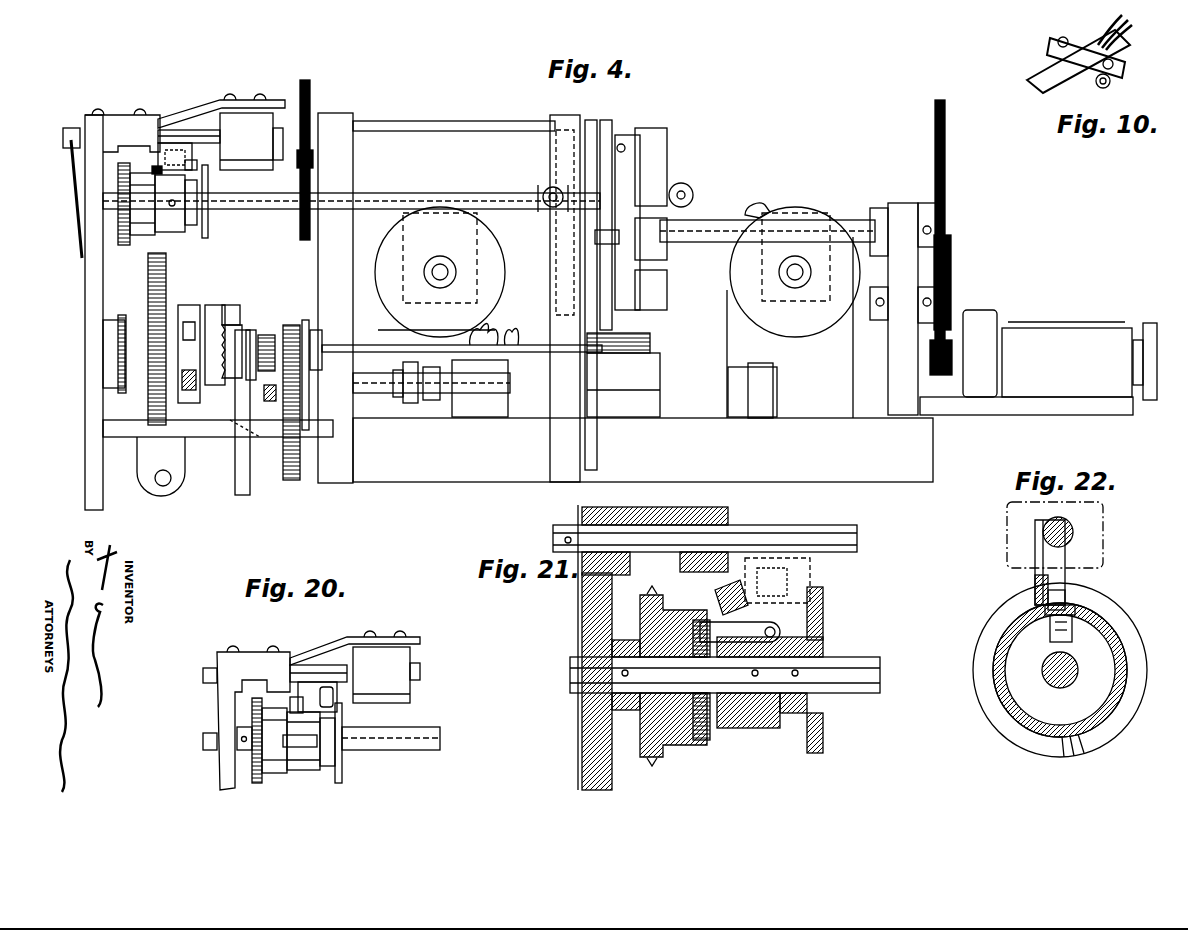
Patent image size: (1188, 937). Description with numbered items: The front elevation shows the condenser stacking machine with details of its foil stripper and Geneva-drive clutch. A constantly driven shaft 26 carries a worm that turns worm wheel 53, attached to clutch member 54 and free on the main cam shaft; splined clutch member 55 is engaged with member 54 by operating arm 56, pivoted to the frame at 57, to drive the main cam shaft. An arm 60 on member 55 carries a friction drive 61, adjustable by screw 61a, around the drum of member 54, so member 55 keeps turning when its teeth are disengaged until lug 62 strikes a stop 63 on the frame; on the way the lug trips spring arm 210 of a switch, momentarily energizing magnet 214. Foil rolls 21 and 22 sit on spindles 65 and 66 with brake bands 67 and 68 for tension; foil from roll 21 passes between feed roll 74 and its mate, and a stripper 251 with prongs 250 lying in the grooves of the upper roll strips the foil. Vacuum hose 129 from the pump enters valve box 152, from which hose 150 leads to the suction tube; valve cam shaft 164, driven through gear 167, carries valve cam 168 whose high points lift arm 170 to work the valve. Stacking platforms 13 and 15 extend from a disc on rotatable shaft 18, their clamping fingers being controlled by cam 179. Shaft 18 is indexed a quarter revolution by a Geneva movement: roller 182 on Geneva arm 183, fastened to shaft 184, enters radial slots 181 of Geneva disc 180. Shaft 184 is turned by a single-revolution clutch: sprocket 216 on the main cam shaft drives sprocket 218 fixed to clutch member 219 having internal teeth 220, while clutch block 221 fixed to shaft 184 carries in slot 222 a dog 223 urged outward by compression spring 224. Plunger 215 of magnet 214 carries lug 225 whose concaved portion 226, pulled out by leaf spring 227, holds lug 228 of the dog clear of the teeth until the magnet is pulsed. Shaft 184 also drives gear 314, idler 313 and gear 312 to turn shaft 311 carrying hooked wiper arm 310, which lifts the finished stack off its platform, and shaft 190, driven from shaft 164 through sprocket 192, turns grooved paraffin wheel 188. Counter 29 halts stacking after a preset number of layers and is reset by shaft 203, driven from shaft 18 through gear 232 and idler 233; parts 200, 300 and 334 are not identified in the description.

In FIG. 4, the platform 13 is at (642, 138).
In FIG. 4, the platform 15 is at (650, 326).
In FIG. 4, the rotatable shaft 18 is at (856, 218).
In FIG. 4, the foil roll 21 is at (393, 250).
In FIG. 4, the foil roll 22 is at (800, 333).
In FIG. 21, the foil roll 22 is at (718, 498).
In FIG. 4, the constantly driven shaft 26 is at (165, 487).
In FIG. 4, the counter 29 is at (1062, 328).
In FIG. 4, the worm wheel 53 is at (167, 282).
In FIG. 4, the clutch member 54 is at (218, 305).
In FIG. 4, the clutch member 55 is at (238, 337).
In FIG. 4, the operating arm 56 is at (250, 490).
In FIG. 4, the pivot 57 is at (234, 439).
In FIG. 4, the arm 60 is at (237, 303).
In FIG. 4, the friction drive 61 is at (190, 305).
In FIG. 4, the screw 61a is at (200, 380).
In FIG. 4, the lug 62 is at (255, 330).
In FIG. 4, the stop 63 is at (268, 402).
In FIG. 4, the spindle 65 is at (440, 262).
In FIG. 4, the spindle 66 is at (294, 480).
In FIG. 4, the brake band 67 is at (466, 197).
In FIG. 4, the brake band 68 is at (758, 205).
In FIG. 4, the feed roll 74 is at (692, 192).
In FIG. 4, the vacuum hose 129 is at (436, 321).
In FIG. 4, the vacuum hose 150 is at (492, 330).
In FIG. 4, the box 152 is at (473, 418).
In FIG. 4, the valve cam shaft 164 is at (366, 393).
In FIG. 4, the gear 167 is at (304, 320).
In FIG. 4, the valve cam 168 is at (408, 404).
In FIG. 4, the arm 170 is at (430, 401).
In FIG. 4, the cam 179 is at (640, 178).
In FIG. 4, the Geneva disc 180 is at (608, 145).
In FIG. 4, the radial slots 181 is at (575, 262).
In FIG. 4, the roller 182 is at (595, 237).
In FIG. 4, the Geneva arm 183 is at (565, 166).
In FIG. 4, the shaft 184 is at (352, 200).
In FIG. 20, the shaft 184 is at (378, 752).
In FIG. 21, the shaft 184 is at (853, 664).
In FIG. 22, the shaft 184 is at (1080, 670).
In FIG. 4, the grooved wheel 188 is at (655, 345).
In FIG. 4, the shaft 190 is at (362, 346).
In FIG. 4, the sprocket 192 is at (318, 330).
In FIG. 4, the pulley 200 is at (1137, 340).
In FIG. 4, the counter resetting shaft 203 is at (962, 318).
In FIG. 4, the spring arm 210 is at (266, 335).
In FIG. 4, the magnet 214 is at (236, 170).
In FIG. 20, the magnet 214 is at (410, 695).
In FIG. 4, the plunger 215 is at (186, 130).
In FIG. 20, the plunger 215 is at (300, 670).
In FIG. 21, the plunger 215 is at (795, 535).
In FIG. 22, the plunger 215 is at (1074, 535).
In FIG. 4, the sprocket wheel 216 is at (121, 318).
In FIG. 4, the sprocket wheel 218 is at (125, 225).
In FIG. 20, the sprocket wheel 218 is at (255, 712).
In FIG. 21, the sprocket wheel 218 is at (652, 592).
In FIG. 4, the clutch member 219 is at (128, 245).
In FIG. 20, the clutch member 219 is at (262, 772).
In FIG. 21, the clutch member 219 is at (672, 745).
In FIG. 21, the internal clutch teeth 220 is at (712, 730).
In FIG. 22, the internal clutch teeth 220 is at (1030, 710).
In FIG. 4, the clutch block 221 is at (180, 232).
In FIG. 20, the clutch block 221 is at (312, 772).
In FIG. 21, the clutch block 221 is at (770, 733).
In FIG. 21, the slot 222 is at (786, 667).
In FIG. 4, the dog 223 is at (206, 158).
In FIG. 20, the dog 223 is at (318, 740).
In FIG. 21, the dog 223 is at (735, 625).
In FIG. 22, the dog 223 is at (1076, 612).
In FIG. 21, the compression spring 224 is at (711, 667).
In FIG. 22, the compression spring 224 is at (1073, 630).
In FIG. 4, the lug 225 is at (172, 143).
In FIG. 20, the lug 225 is at (320, 688).
In FIG. 21, the lug 225 is at (811, 578).
In FIG. 22, the lug 225 is at (1060, 580).
In FIG. 20, the concaved engaging portion 226 is at (296, 697).
In FIG. 21, the concaved engaging portion 226 is at (770, 598).
In FIG. 22, the concaved engaging portion 226 is at (1055, 597).
In FIG. 4, the leaf spring 227 is at (72, 160).
In FIG. 20, the leaf spring 227 is at (215, 688).
In FIG. 21, the leaf spring 227 is at (580, 628).
In FIG. 4, the lug 228 is at (155, 168).
In FIG. 21, the lug 228 is at (718, 600).
In FIG. 22, the lug 228 is at (1035, 595).
In FIG. 4, the gear 232 is at (946, 150).
In FIG. 4, the idler gear 233 is at (952, 272).
In FIG. 10, the prongs 250 is at (1128, 38).
In FIG. 10, the stripper 251 is at (1043, 72).
In FIG. 4, the block 300 is at (650, 192).
In FIG. 4, the hooked wiper arm 310 is at (596, 122).
In FIG. 4, the shaft 311 is at (432, 122).
In FIG. 4, the gear 312 is at (313, 152).
In FIG. 4, the idler 313 is at (294, 158).
In FIG. 4, the gear 314 is at (300, 228).
In FIG. 4, the stop 334 is at (938, 368).